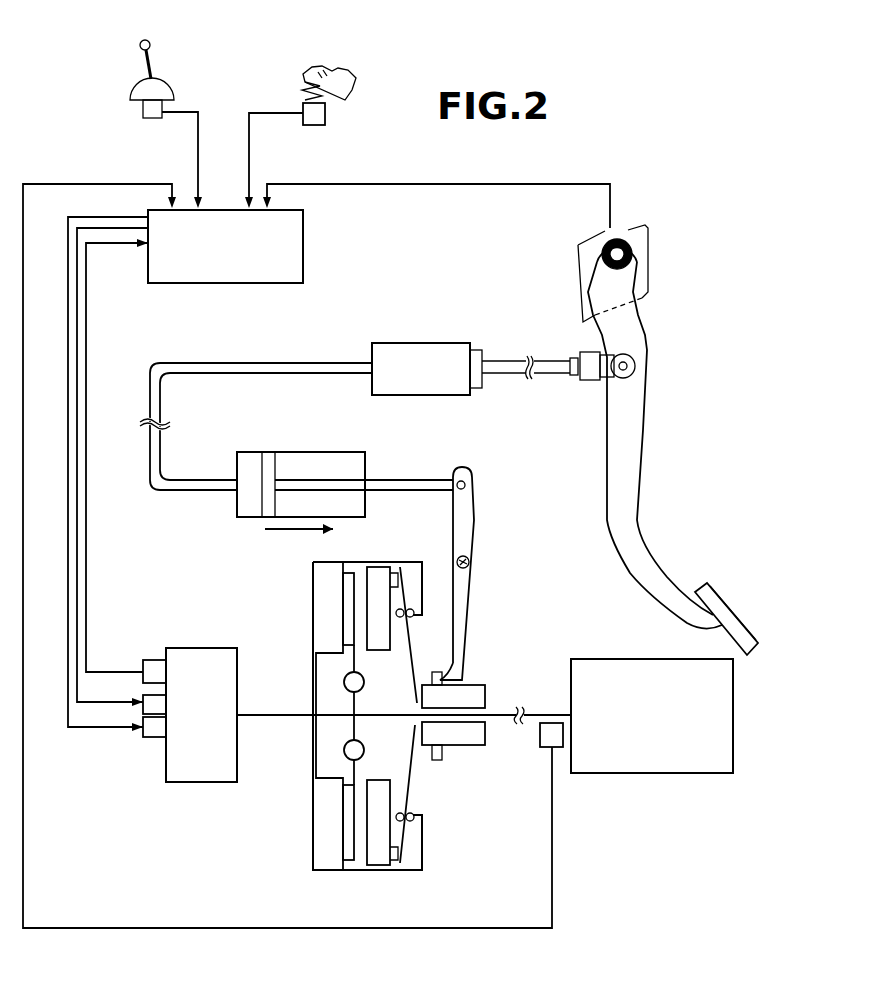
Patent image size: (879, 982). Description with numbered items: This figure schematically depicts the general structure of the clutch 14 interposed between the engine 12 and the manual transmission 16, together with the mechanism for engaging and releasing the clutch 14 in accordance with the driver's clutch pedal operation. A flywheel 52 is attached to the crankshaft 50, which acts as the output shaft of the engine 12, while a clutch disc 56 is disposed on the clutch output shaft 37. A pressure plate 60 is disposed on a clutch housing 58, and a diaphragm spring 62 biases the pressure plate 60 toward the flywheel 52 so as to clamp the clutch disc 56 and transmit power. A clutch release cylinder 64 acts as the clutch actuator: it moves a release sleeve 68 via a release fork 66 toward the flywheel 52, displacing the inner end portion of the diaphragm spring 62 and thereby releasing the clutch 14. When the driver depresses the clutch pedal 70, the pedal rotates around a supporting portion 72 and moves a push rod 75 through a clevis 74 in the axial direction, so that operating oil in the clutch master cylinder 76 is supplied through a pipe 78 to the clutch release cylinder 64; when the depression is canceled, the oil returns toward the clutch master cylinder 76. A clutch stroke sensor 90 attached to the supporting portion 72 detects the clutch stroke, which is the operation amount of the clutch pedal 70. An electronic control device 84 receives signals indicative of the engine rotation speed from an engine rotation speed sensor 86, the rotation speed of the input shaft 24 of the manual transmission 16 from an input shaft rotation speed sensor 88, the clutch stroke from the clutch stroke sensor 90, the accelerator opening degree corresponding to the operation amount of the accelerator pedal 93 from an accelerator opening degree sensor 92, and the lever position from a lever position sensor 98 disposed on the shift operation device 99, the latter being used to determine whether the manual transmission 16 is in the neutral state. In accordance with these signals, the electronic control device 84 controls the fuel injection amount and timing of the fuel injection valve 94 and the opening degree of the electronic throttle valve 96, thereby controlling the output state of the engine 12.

The engine 12 is at (197, 655).
The clutch 14 is at (532, 526).
The manual transmission 16 is at (633, 673).
The input shaft 24 is at (548, 715).
The clutch output shaft 37 is at (503, 718).
The crankshaft 50 is at (267, 717).
The flywheel 52 is at (325, 623).
The clutch disc 56 is at (348, 838).
The clutch housing 58 is at (372, 560).
The pressure plate 60 is at (378, 852).
The diaphragm spring 62 is at (410, 795).
The clutch release cylinder 64 is at (325, 452).
The release fork 66 is at (465, 530).
The release sleeve 68 is at (470, 690).
The clutch pedal 70 is at (625, 468).
The supporting portion 72 is at (633, 255).
The clevis 74 is at (601, 376).
The push rod 75 is at (505, 362).
The clutch master cylinder 76 is at (392, 353).
The pipe 78 is at (305, 367).
The electronic control device 84 is at (285, 228).
The engine rotation speed sensor 86 is at (152, 670).
The input shaft rotation speed sensor 88 is at (556, 740).
The clutch stroke sensor 90 is at (617, 232).
The accelerator opening degree sensor 92 is at (325, 110).
The accelerator pedal 93 is at (305, 80).
The fuel injection valve 94 is at (147, 690).
The electronic throttle valve 96 is at (157, 728).
The lever position sensor 98 is at (140, 112).
The shift operation device 99 is at (171, 68).